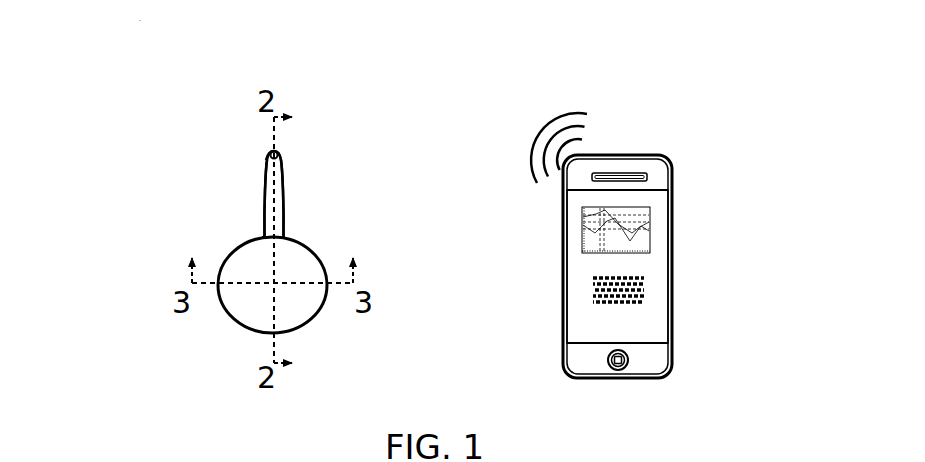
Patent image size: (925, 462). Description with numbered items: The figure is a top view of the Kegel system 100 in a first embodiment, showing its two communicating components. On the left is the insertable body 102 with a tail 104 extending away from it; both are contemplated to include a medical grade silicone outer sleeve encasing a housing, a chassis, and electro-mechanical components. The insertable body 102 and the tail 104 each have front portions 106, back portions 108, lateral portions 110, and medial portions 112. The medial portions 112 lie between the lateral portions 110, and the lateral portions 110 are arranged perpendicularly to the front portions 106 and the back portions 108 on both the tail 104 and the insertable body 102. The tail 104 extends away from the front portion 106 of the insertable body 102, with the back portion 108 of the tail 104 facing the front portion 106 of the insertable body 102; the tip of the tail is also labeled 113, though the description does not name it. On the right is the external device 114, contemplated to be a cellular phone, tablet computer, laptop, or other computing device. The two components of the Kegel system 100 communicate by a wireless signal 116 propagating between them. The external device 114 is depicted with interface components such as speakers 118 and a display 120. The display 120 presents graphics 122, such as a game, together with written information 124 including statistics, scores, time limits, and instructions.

The Kegel system 100 is at (182, 27).
The insertable body 102 is at (240, 263).
The tail 104 is at (284, 185).
The front portion 106 is at (262, 146).
The back portion 108 is at (258, 185).
The lateral portion 110 is at (289, 198).
The medial portion 112 is at (283, 233).
The tip 113 is at (281, 148).
The external device 114 is at (675, 137).
The wireless signal 116 is at (573, 114).
The speakers 118 is at (636, 172).
The display 120 is at (659, 222).
The graphics 122 is at (644, 246).
The written information 124 is at (657, 290).